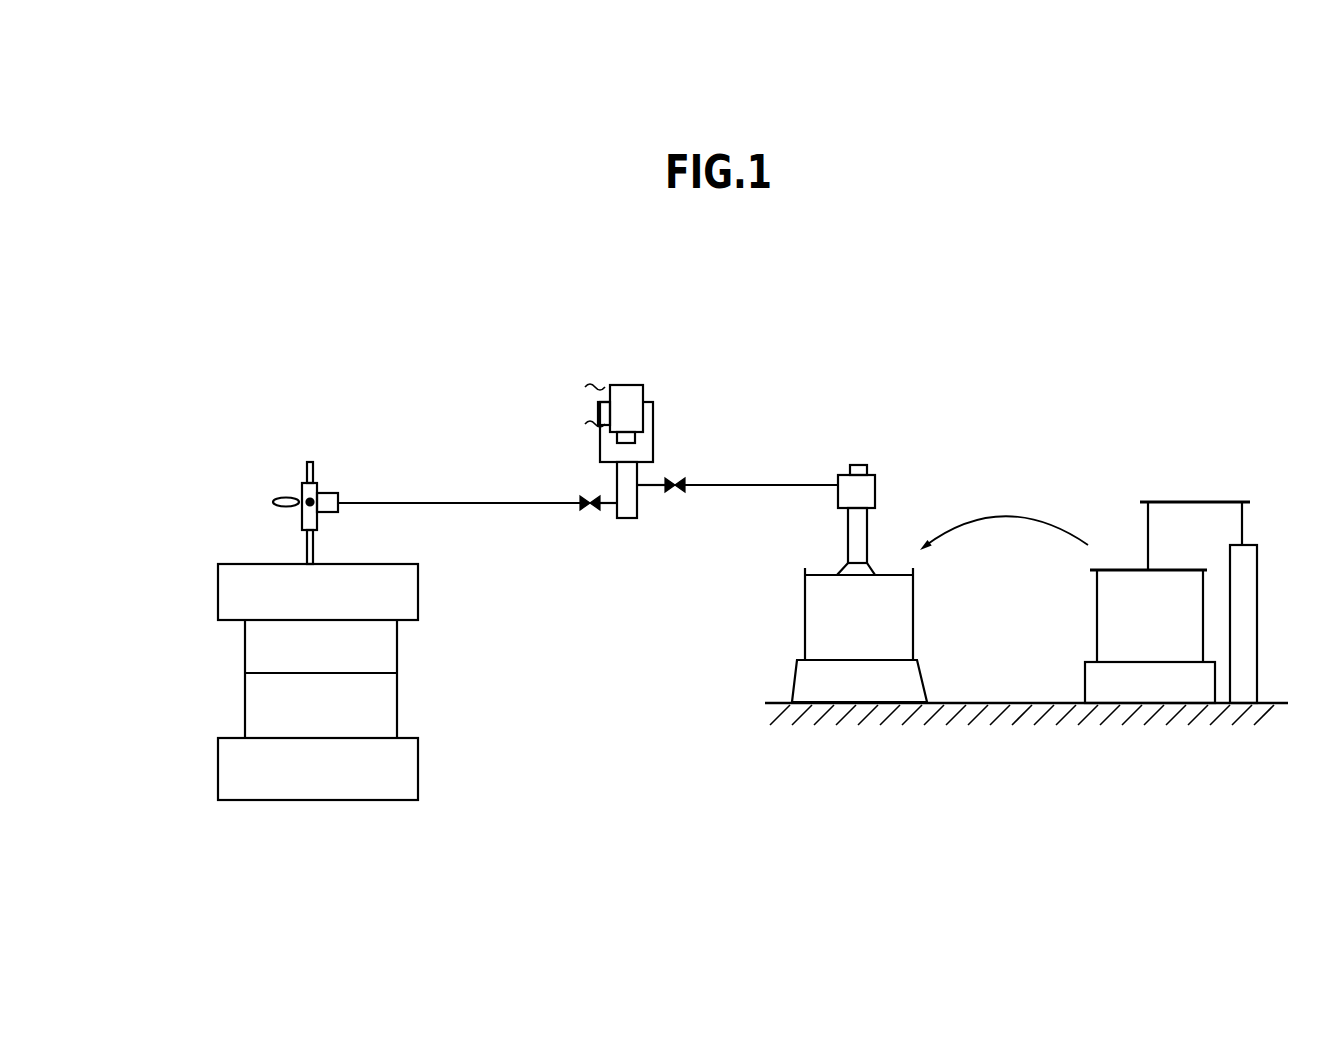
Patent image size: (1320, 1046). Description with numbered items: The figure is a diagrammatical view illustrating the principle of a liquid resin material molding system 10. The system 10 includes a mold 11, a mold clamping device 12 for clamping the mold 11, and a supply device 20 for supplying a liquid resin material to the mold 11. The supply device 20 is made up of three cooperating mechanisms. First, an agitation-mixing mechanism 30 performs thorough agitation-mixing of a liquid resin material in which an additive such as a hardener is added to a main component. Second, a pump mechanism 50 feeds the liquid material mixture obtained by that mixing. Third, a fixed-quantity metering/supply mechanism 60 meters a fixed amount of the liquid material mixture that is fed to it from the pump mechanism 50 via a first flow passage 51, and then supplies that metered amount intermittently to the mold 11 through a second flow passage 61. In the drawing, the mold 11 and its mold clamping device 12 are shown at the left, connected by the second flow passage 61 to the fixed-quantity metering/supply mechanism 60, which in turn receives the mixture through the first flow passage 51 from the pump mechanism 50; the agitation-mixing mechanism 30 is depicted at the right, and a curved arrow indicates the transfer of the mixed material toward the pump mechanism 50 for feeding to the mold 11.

The liquid resin material molding system 10 is at (985, 226).
The mold 11 is at (270, 708).
The mold clamping device 12 is at (225, 593).
The supply device 20 is at (692, 680).
The agitation-mixing mechanism 30 is at (1180, 476).
The pump mechanism 50 is at (850, 445).
The first flow passage 51 is at (745, 486).
The fixed-quantity metering/supply mechanism 60 is at (610, 369).
The second flow passage 61 is at (441, 502).